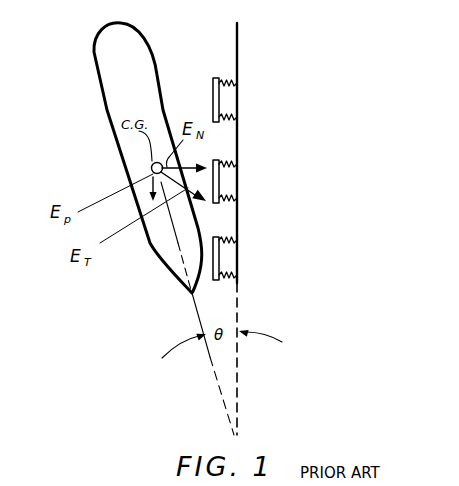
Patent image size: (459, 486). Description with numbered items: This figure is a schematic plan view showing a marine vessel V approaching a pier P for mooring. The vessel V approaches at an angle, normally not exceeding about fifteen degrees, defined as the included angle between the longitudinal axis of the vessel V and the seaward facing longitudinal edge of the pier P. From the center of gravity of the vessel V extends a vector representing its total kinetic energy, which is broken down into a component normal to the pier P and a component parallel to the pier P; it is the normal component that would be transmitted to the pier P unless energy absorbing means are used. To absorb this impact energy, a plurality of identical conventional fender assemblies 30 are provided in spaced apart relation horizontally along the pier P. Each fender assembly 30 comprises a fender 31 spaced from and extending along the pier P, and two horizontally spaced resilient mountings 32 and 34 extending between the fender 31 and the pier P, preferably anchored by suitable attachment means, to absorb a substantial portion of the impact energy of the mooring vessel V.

The marine vessel V is at (100, 99).
The pier P is at (246, 140).
The fender assembly 30 is at (240, 173).
The fender 31 is at (213, 98).
The resilient mounting 32 is at (225, 81).
The resilient mounting 34 is at (229, 116).